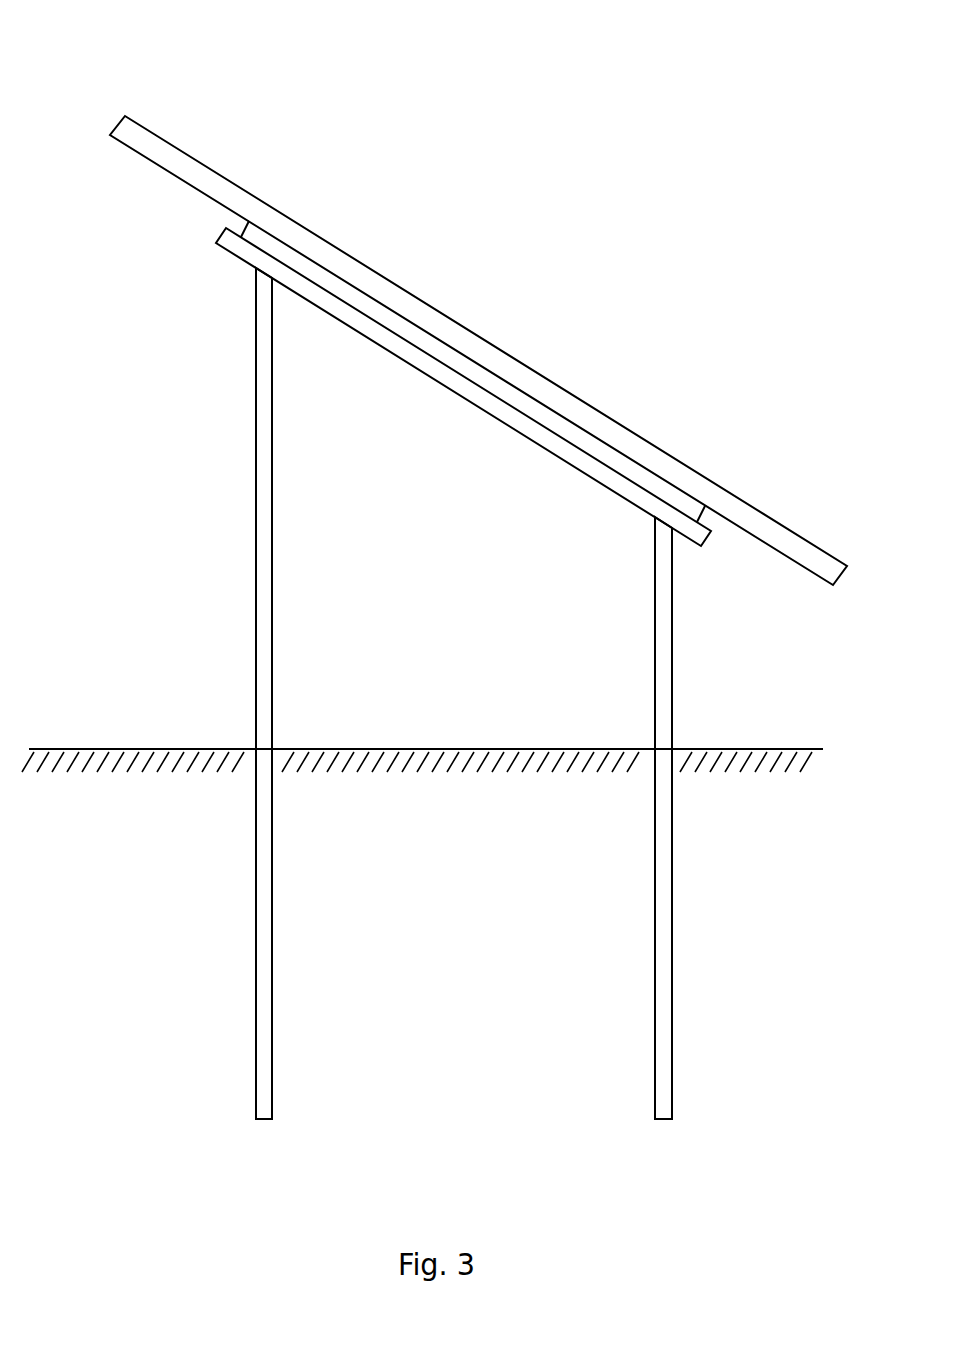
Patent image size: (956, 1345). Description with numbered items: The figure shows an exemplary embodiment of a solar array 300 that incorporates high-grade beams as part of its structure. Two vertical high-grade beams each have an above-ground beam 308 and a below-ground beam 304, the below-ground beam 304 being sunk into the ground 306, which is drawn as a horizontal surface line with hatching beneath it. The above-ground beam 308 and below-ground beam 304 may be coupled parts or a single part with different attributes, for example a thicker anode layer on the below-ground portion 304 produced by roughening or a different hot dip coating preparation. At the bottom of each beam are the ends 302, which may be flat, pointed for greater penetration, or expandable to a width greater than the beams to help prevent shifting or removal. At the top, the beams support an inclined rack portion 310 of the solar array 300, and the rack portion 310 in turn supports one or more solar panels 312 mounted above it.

The solar array 300 is at (434, 559).
The ends 302 is at (637, 1105).
The below-ground beam 304 is at (637, 893).
The ground 306 is at (166, 735).
The above-ground beam 308 is at (637, 583).
The rack portion 310 is at (205, 249).
The solar panels 312 is at (394, 260).